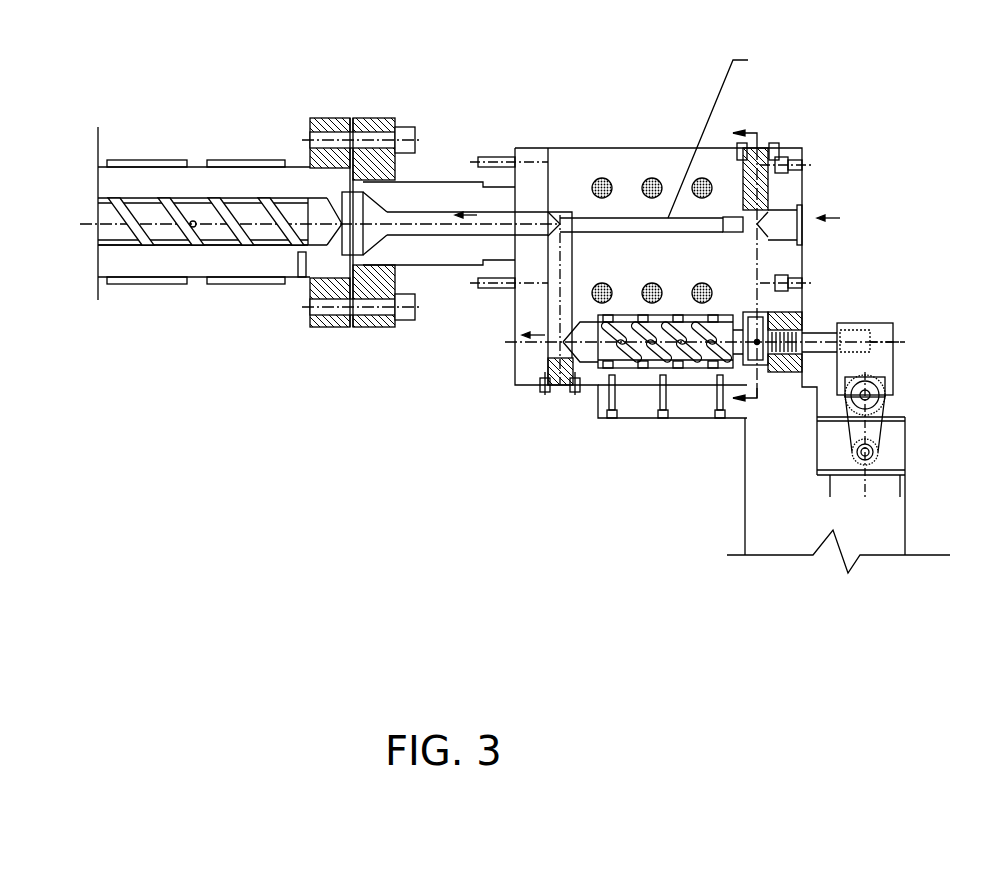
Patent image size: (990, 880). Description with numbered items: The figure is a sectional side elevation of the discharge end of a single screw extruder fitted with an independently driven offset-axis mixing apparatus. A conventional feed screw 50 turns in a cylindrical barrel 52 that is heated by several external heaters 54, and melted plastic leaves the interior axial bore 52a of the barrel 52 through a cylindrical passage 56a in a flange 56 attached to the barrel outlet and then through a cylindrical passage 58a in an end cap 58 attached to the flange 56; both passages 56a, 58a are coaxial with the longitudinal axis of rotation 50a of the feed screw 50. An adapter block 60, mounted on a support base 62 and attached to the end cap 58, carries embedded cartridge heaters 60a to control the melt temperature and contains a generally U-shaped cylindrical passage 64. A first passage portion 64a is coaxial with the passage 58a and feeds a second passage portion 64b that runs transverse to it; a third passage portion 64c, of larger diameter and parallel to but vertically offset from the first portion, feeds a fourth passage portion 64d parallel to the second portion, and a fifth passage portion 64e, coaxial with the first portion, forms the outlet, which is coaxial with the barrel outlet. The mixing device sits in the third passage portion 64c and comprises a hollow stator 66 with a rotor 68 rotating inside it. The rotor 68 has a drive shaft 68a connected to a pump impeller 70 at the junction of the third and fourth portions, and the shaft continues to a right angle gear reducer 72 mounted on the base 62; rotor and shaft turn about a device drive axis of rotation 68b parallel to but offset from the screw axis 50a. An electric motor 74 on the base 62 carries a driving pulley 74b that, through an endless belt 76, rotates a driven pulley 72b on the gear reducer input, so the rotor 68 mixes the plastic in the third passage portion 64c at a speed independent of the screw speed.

The feed screw 50 is at (205, 245).
The longitudinal axis of rotation 50a is at (248, 223).
The cylindrical barrel 52 is at (152, 182).
The interior axial bore 52a is at (153, 245).
The external heaters 54 is at (252, 162).
The flange 56 is at (325, 118).
The cylindrical passage 56a is at (342, 197).
The end cap 58 is at (430, 185).
The cylindrical passage 58a is at (470, 228).
The adapter block 60 is at (628, 148).
The cartridge heaters 60a is at (648, 183).
The support base 62 is at (770, 505).
The U-shaped cylindrical passage 64 is at (512, 365).
The first passage portion 64a is at (547, 216).
The second passage portion 64b is at (568, 293).
The third passage portion 64c is at (580, 335).
The fourth passage portion 64d is at (768, 250).
The fifth passage portion 64e is at (790, 210).
The stator 66 is at (698, 370).
The rotor 68 is at (588, 358).
The drive shaft 68a is at (815, 330).
The device drive axis of rotation 68b is at (897, 340).
The pump impeller 70 is at (760, 366).
The right angle gear reducer 72 is at (882, 357).
The driven pulley 72b is at (880, 388).
The electric motor 74 is at (880, 470).
The driving pulley 74b is at (875, 452).
The endless belt 76 is at (883, 430).